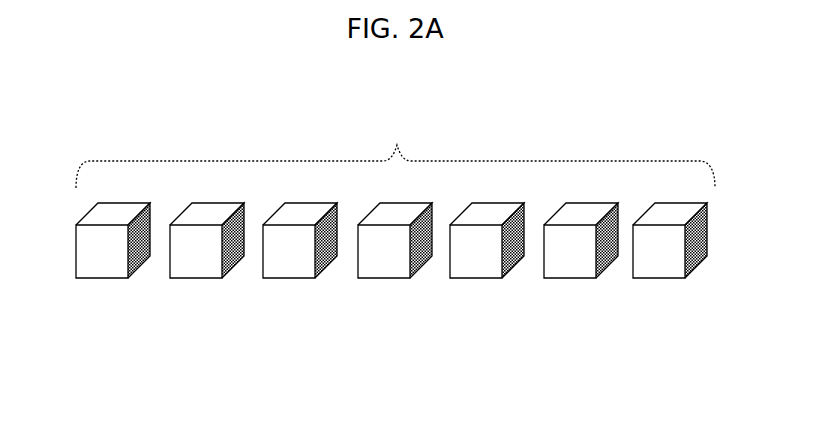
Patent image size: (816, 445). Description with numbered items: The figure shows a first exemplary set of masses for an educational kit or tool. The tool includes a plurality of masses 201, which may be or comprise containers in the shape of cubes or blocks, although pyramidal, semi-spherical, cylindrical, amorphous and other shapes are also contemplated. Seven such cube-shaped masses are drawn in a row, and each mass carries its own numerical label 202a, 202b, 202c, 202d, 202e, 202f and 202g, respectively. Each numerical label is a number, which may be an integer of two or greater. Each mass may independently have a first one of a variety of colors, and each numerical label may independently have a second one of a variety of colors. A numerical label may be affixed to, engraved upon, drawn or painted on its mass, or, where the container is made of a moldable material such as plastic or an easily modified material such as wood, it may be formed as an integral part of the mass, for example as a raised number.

The plurality of masses 201 is at (395, 149).
The numerical label 202a is at (105, 273).
The numerical label 202b is at (199, 273).
The numerical label 202c is at (292, 273).
The numerical label 202d is at (387, 273).
The numerical label 202e is at (479, 273).
The numerical label 202f is at (573, 273).
The numerical label 202g is at (662, 273).